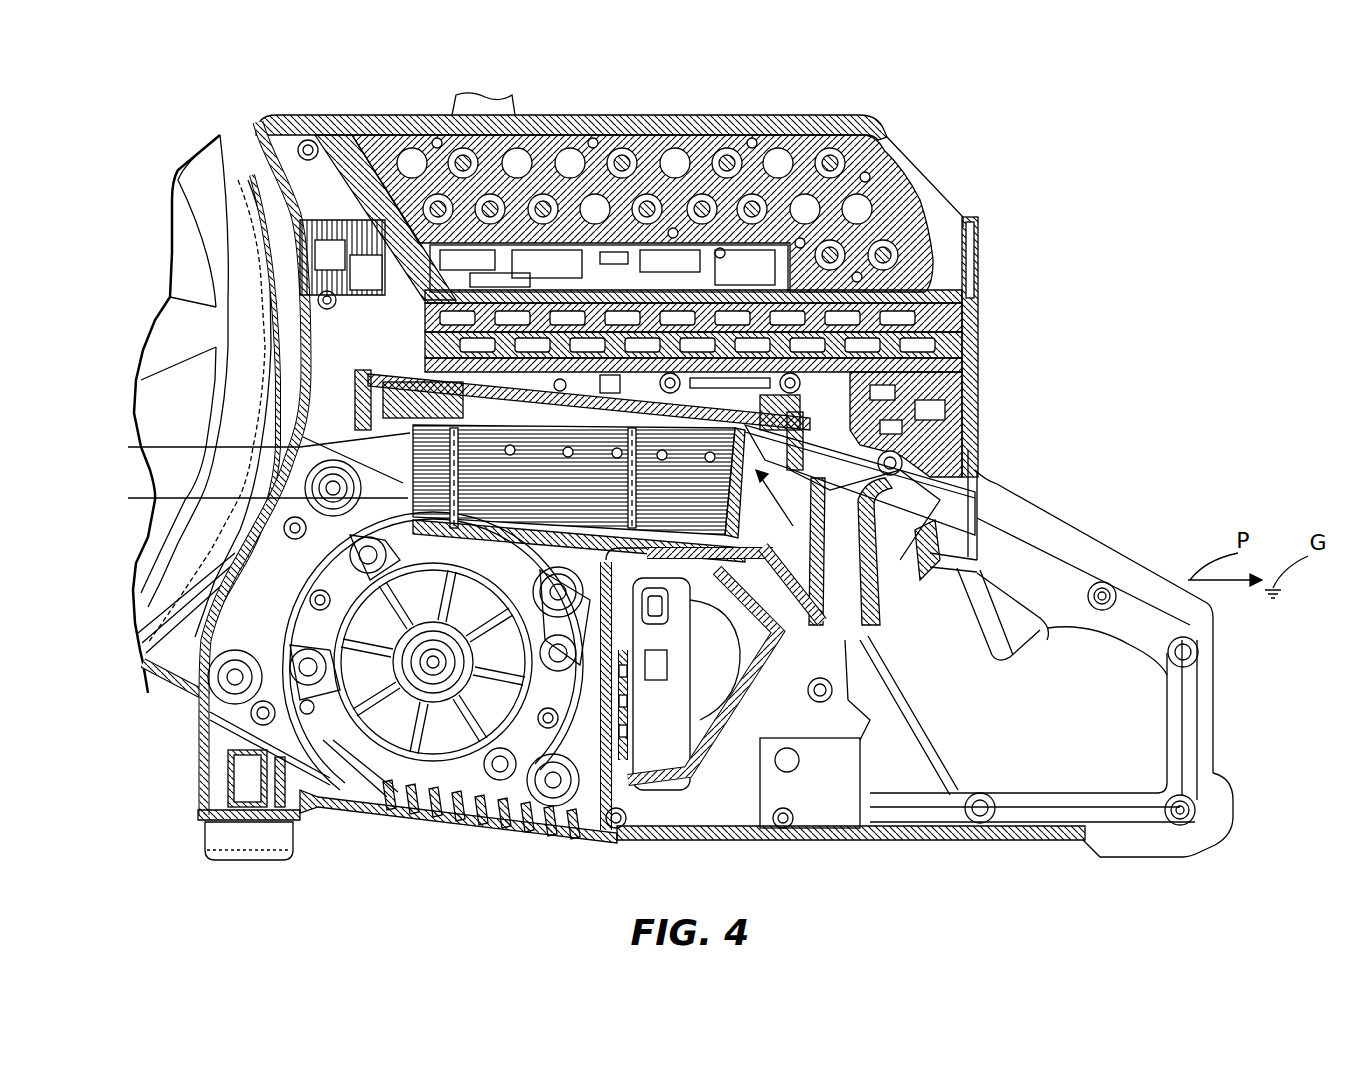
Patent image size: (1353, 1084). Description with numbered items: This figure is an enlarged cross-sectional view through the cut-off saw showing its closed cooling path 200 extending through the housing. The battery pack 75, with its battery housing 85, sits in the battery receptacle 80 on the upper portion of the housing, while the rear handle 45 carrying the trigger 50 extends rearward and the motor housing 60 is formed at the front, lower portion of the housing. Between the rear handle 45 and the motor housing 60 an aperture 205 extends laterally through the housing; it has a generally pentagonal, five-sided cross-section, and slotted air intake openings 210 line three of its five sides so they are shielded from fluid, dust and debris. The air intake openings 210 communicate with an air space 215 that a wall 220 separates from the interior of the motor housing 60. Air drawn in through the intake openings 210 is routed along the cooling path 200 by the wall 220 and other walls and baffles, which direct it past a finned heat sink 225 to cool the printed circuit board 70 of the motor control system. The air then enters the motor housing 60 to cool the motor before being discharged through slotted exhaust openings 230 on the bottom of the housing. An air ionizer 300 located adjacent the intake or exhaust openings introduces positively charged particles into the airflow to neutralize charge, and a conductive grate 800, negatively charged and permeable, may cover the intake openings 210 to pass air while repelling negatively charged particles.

The rear handle 45 is at (1082, 543).
The trigger 50 is at (990, 622).
The motor housing 60 is at (318, 815).
The printed circuit board 70 is at (251, 468).
The battery pack 75 is at (628, 106).
The battery receptacle 80 is at (992, 316).
The battery housing 85 is at (902, 150).
The cooling path 200 is at (397, 818).
The aperture 205 is at (705, 835).
The air intake openings 210 is at (680, 578).
The air space 215 is at (660, 812).
The wall 220 is at (617, 838).
The finned heat sink 225 is at (332, 633).
The exhaust openings 230 is at (513, 878).
The air ionizer 300 is at (648, 672).
The conductive grate 800 is at (804, 832).